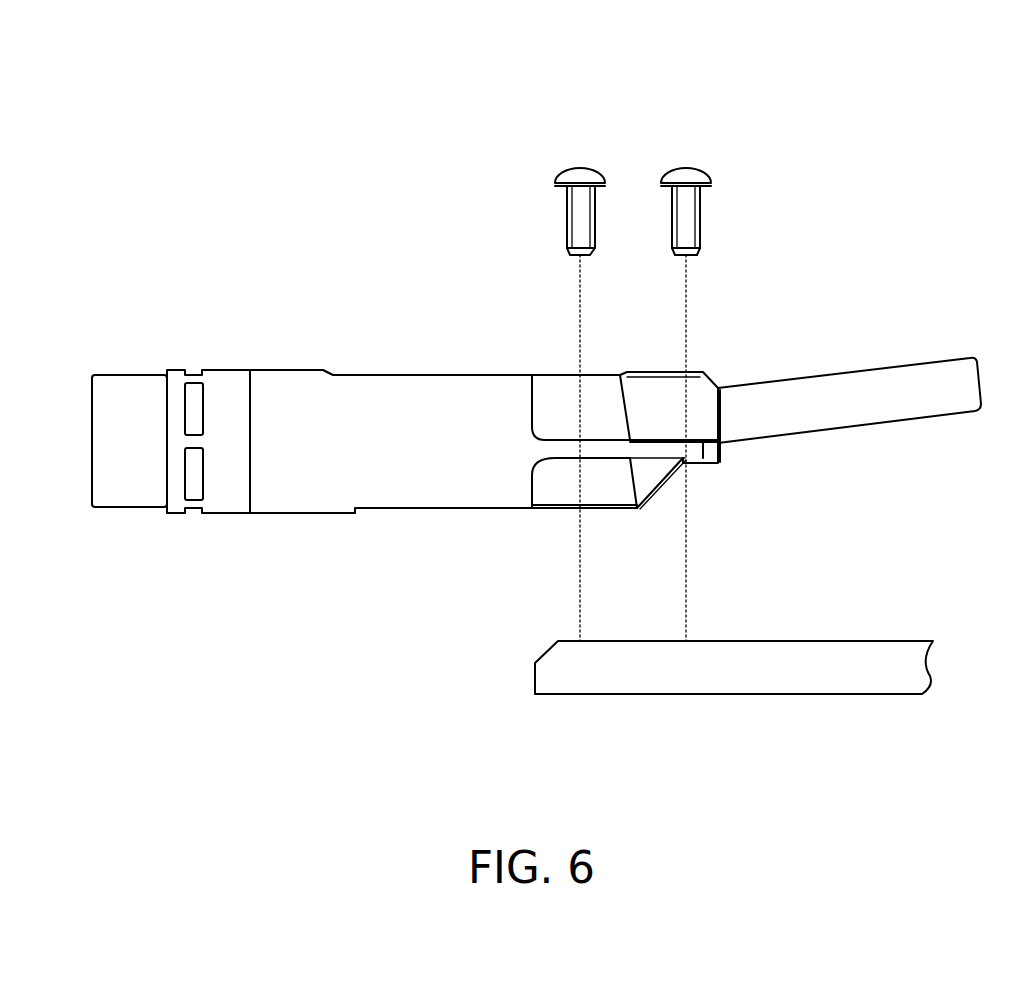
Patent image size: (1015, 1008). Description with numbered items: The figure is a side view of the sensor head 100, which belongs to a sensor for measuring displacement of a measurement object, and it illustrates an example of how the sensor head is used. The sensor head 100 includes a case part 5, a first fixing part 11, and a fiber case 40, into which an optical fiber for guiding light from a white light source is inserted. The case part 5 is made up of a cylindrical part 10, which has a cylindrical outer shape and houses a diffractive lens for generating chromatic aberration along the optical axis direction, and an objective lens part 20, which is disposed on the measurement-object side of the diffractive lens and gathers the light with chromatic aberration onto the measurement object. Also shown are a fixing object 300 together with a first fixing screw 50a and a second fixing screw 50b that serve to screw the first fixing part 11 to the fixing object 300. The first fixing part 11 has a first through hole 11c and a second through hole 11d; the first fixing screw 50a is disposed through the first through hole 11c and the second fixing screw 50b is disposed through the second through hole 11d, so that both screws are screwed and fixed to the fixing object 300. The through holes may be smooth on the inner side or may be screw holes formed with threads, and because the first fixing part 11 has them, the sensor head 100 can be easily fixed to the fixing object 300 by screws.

The sensor head 100 is at (826, 127).
The case part 5 is at (363, 637).
The cylindrical part 10 is at (318, 500).
The objective lens part 20 is at (223, 500).
The first fixing part 11 is at (718, 455).
The first through hole 11c is at (577, 465).
The second through hole 11d is at (680, 460).
The fiber case 40 is at (875, 370).
The first fixing screw 50a is at (575, 177).
The second fixing screw 50b is at (683, 177).
The fixing object 300 is at (748, 682).